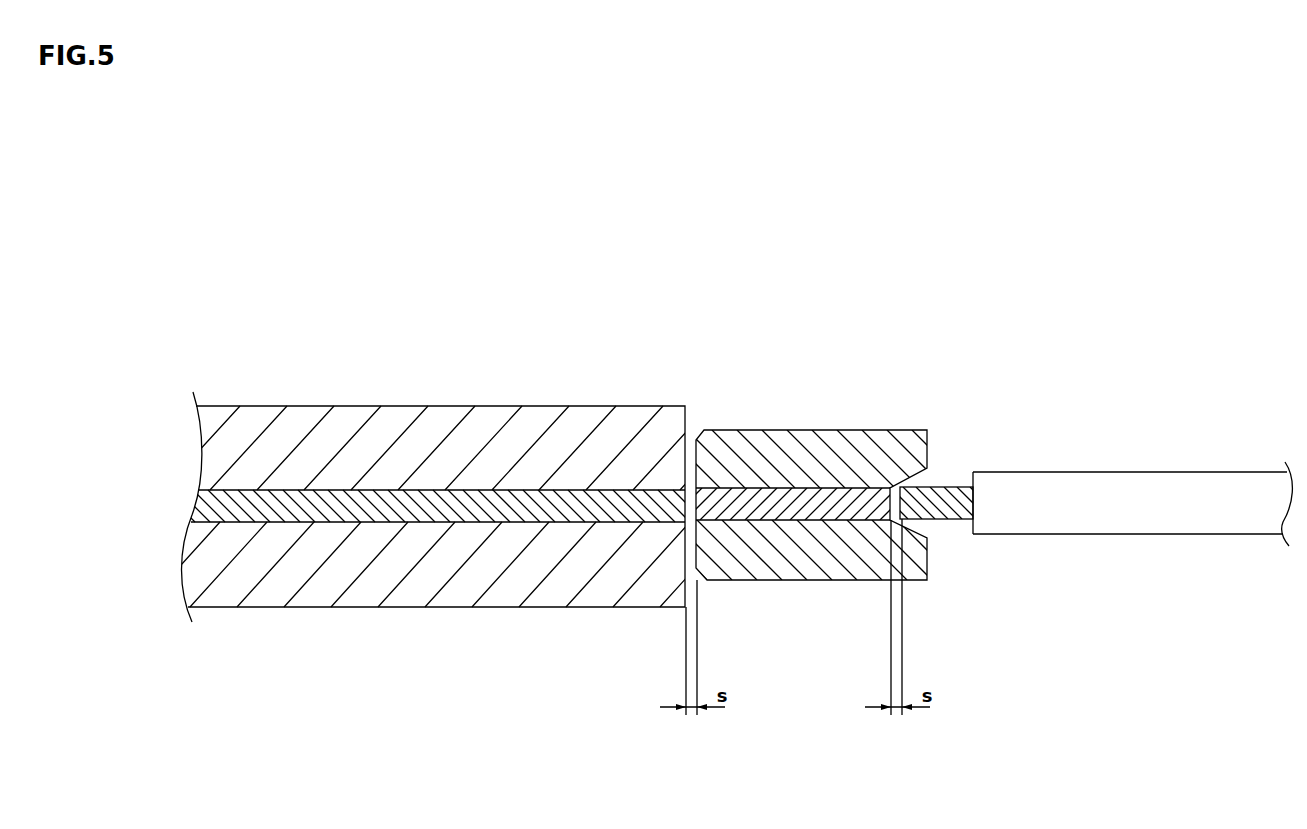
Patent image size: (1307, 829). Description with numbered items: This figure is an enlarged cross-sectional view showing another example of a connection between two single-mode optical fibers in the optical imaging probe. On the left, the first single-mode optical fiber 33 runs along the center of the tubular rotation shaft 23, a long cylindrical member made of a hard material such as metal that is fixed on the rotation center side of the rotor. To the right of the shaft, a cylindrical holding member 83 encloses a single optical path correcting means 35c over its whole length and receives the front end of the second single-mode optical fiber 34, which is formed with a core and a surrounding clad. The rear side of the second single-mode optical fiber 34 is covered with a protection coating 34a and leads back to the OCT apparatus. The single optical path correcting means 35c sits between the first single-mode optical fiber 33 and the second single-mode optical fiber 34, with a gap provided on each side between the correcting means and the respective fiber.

The tubular rotation shaft 23 is at (585, 406).
The first single-mode optical fiber 33 is at (413, 498).
The cylindrical holding member 83 is at (868, 430).
The single optical path correcting means 35c is at (795, 488).
The second single-mode optical fiber 34 is at (960, 487).
The protection coating 34a is at (1137, 472).